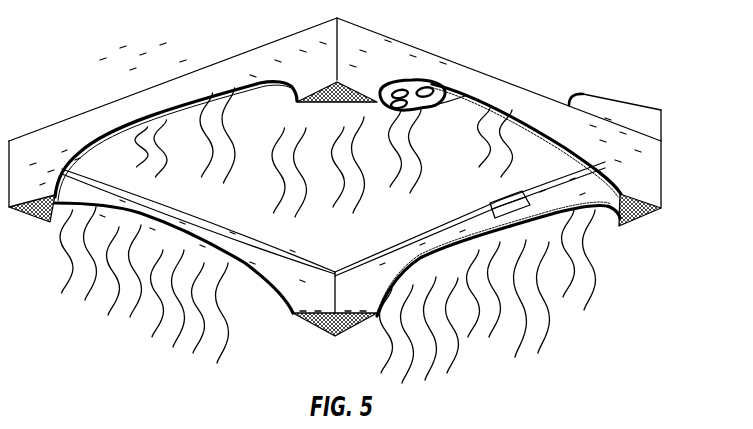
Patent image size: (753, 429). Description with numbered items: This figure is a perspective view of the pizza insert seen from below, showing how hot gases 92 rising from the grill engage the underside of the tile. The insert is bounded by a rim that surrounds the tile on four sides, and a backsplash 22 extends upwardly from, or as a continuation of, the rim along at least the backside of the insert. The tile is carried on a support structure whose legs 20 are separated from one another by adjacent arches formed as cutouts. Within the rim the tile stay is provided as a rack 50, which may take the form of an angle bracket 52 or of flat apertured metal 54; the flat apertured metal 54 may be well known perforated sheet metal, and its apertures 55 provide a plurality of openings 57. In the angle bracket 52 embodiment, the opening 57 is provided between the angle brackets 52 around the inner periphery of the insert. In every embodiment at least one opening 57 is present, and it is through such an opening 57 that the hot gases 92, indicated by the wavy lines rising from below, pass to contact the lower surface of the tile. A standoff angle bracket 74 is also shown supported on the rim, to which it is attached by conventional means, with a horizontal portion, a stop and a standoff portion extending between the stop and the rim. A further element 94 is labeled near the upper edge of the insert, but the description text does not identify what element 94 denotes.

The legs 20 is at (378, 47).
The backsplash 22 is at (623, 110).
The rack 50 is at (338, 179).
The flat apertured metal 54 is at (440, 93).
The angle bracket 52 is at (308, 263).
The apertures 55 is at (418, 92).
The opening 57 is at (430, 96).
The standoff angle bracket 74 is at (517, 200).
The hot gases 92 is at (213, 300).
The upper edge 94 is at (283, 113).